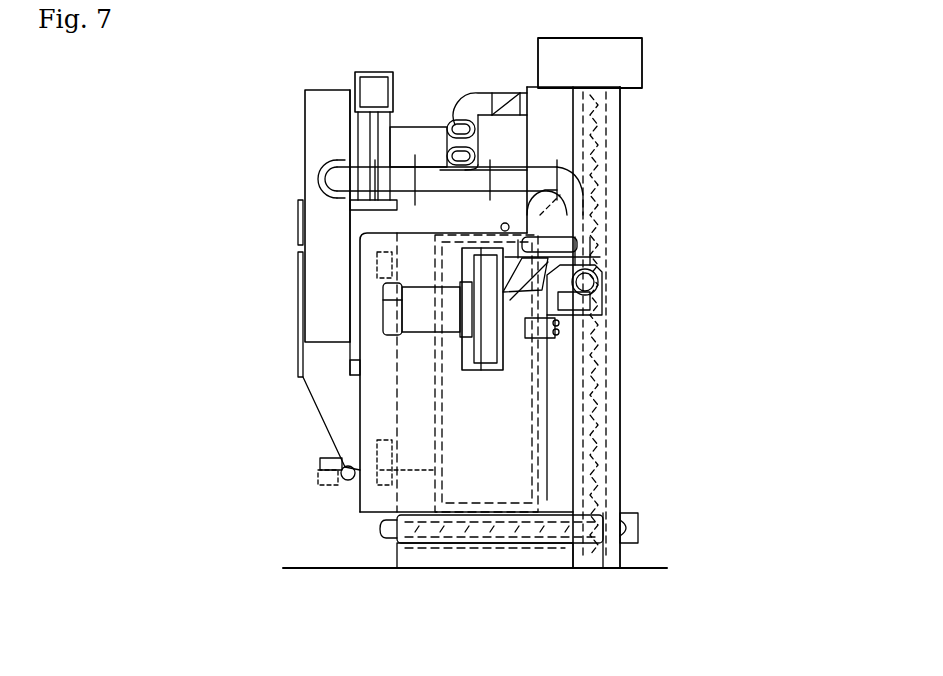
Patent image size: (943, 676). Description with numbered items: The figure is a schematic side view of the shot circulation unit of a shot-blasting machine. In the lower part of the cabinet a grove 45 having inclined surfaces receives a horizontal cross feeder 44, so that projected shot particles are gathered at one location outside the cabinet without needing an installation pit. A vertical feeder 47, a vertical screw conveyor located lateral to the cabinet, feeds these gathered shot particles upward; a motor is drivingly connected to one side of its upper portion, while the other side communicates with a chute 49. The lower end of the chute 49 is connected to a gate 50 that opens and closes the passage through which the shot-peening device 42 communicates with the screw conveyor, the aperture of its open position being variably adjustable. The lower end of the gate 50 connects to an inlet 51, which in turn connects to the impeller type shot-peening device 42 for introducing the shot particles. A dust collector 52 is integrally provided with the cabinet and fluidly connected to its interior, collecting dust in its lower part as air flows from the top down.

The shot-peening device 42 is at (540, 280).
The cross feeder 44 is at (475, 528).
The grove 45 is at (539, 557).
The vertical feeder 47 is at (607, 480).
The chute 49 is at (540, 103).
The gate 50 is at (580, 228).
The inlet 51 is at (605, 303).
The dust collector 52 is at (310, 102).